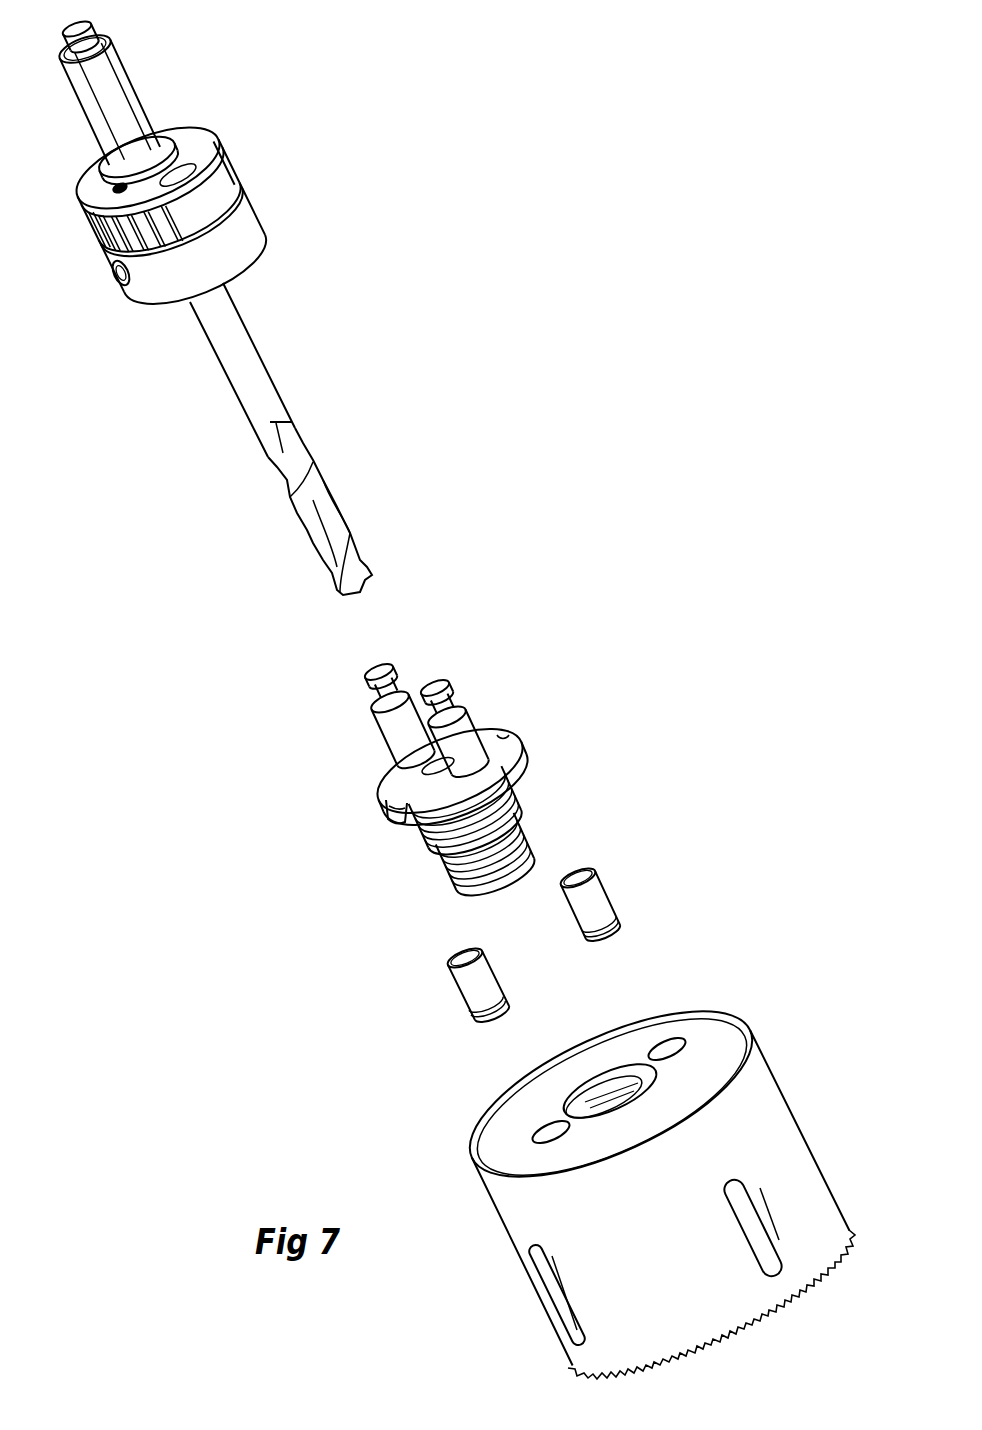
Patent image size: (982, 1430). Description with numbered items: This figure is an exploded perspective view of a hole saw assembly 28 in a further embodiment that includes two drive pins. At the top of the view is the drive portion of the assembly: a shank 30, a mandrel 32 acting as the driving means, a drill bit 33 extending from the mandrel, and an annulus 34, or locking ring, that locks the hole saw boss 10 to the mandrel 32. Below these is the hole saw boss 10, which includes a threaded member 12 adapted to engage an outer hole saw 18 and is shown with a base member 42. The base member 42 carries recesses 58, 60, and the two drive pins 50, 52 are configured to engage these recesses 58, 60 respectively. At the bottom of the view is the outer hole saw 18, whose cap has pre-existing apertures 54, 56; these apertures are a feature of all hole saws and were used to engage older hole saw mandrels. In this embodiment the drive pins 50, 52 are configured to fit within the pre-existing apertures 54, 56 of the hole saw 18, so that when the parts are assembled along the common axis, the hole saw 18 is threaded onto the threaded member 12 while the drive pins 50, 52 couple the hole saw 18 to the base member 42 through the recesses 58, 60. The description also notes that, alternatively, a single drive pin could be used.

The hole saw boss 10 is at (562, 748).
The threaded member 12 is at (410, 873).
The outer hole saw 18 is at (630, 1142).
The hole saw assembly 28 is at (362, 338).
The shank 30 is at (133, 104).
The mandrel 32 is at (234, 229).
The drill bit 33 is at (258, 430).
The annulus 34 is at (210, 185).
The base member 42 is at (390, 782).
The drive pin 50 is at (603, 897).
The drive pin 52 is at (473, 995).
The pre-existing aperture 54 is at (670, 1050).
The pre-existing aperture 56 is at (550, 1133).
The recess 58 is at (503, 733).
The recess 60 is at (387, 823).